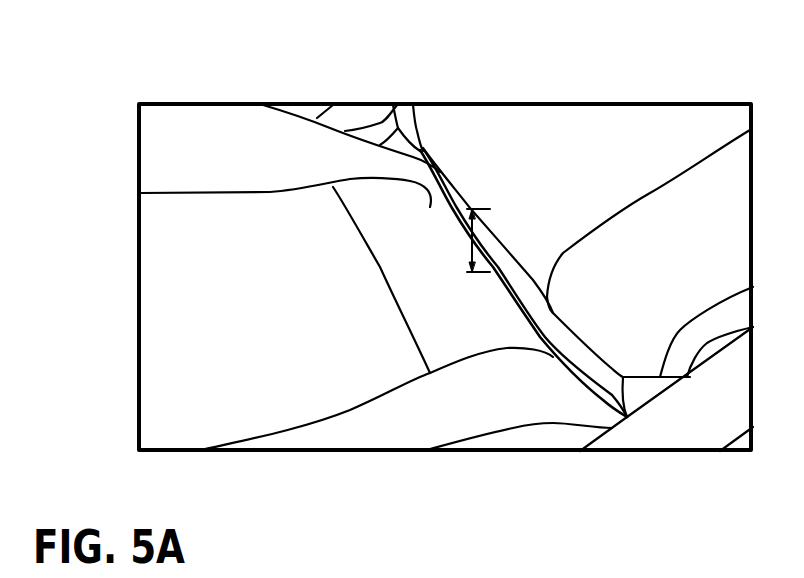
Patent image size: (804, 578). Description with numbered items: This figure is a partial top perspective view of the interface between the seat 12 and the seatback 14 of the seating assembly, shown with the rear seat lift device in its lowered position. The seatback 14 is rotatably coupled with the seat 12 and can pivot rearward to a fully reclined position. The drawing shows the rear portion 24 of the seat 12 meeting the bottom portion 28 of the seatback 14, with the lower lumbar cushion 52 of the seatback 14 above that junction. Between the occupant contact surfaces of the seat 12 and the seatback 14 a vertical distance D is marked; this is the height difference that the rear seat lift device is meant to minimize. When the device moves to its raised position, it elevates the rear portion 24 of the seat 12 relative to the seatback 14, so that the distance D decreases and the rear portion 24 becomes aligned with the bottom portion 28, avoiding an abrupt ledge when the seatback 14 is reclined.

The seat 12 is at (290, 260).
The seatback 14 is at (628, 137).
The rear portion 24 is at (423, 205).
The bottom portion 28 is at (452, 168).
The lower lumbar cushion 52 is at (577, 156).
The distance D is at (472, 253).